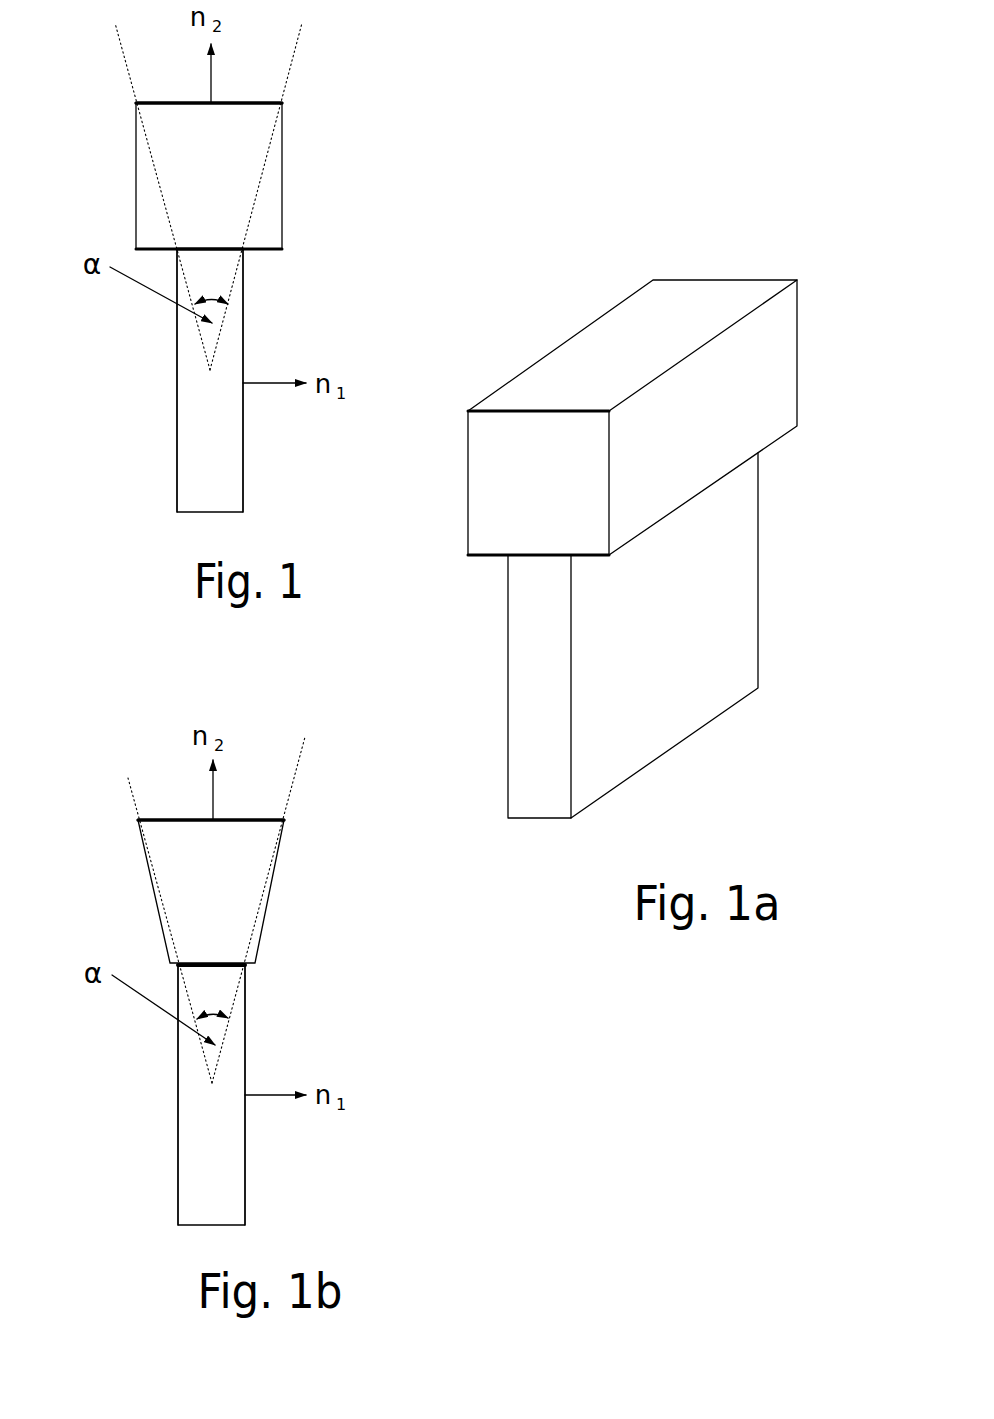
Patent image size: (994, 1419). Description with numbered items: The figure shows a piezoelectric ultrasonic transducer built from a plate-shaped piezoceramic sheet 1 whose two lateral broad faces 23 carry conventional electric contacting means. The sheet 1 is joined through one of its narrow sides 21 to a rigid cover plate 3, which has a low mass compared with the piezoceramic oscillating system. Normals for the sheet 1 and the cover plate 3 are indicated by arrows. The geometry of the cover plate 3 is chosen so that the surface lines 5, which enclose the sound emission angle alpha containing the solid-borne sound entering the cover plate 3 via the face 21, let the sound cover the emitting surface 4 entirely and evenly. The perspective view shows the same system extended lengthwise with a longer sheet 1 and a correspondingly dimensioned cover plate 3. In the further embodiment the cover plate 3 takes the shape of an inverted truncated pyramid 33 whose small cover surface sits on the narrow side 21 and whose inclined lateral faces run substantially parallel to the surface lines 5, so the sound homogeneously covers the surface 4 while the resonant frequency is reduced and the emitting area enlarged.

In FIG. 1, the plate-shaped sheet 1 is at (227, 482).
In FIG. 1A, the plate-shaped sheet 1 is at (725, 552).
In FIG. 1B, the plate-shaped sheet 1 is at (227, 1205).
In FIG. 1, the cover plate 3 is at (268, 188).
In FIG. 1A, the cover plate 3 is at (742, 420).
In FIG. 1B, the inverted truncated pyramid 33 is at (243, 878).
In FIG. 1, the surface of the cover plate 4 is at (253, 101).
In FIG. 1B, the surface of the cover plate 4 is at (254, 817).
In FIG. 1, the surface lines 5 is at (123, 60).
In FIG. 1B, the surface lines 5 is at (128, 793).
In FIG. 1, the narrow side 21 is at (225, 256).
In FIG. 1B, the narrow side 21 is at (229, 972).
In FIG. 1, the lateral broad faces 23 is at (177, 430).
In FIG. 1B, the lateral broad faces 23 is at (180, 1135).